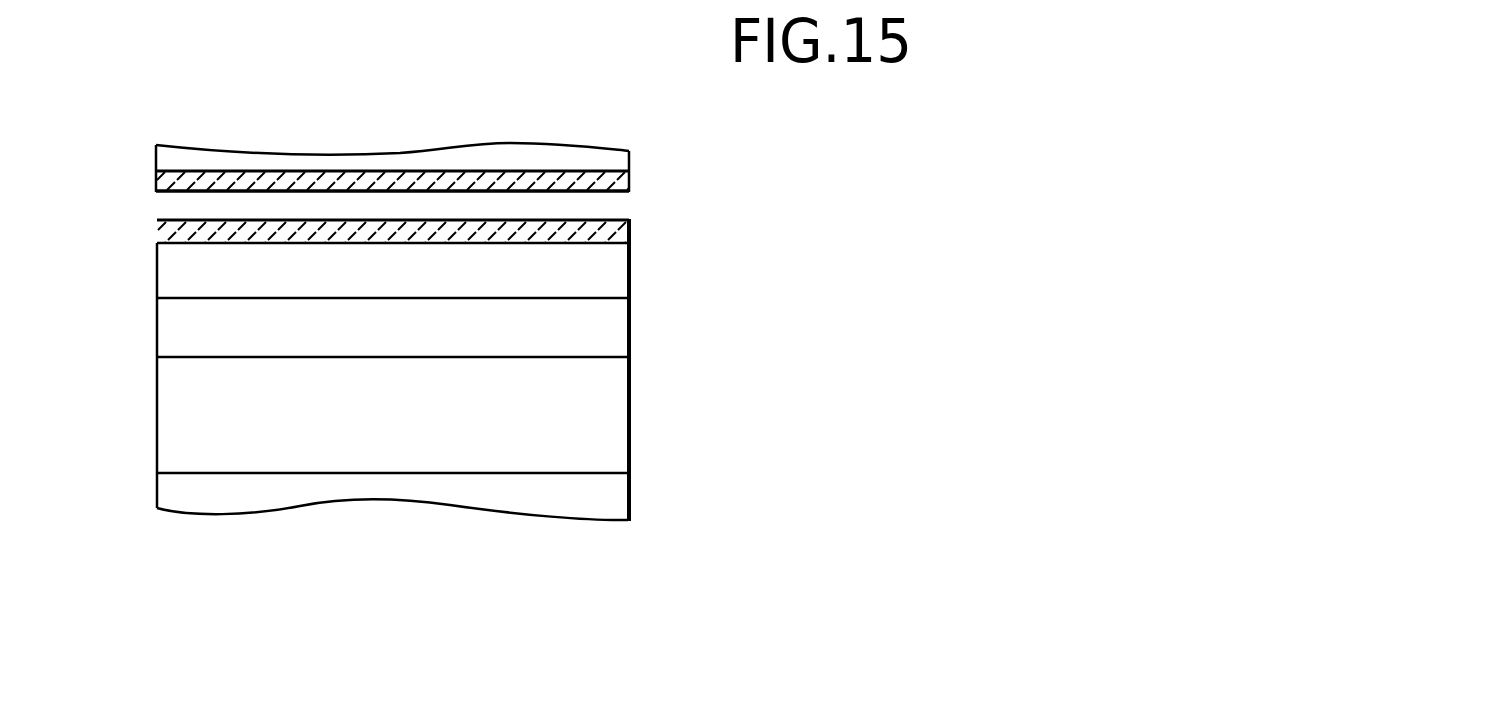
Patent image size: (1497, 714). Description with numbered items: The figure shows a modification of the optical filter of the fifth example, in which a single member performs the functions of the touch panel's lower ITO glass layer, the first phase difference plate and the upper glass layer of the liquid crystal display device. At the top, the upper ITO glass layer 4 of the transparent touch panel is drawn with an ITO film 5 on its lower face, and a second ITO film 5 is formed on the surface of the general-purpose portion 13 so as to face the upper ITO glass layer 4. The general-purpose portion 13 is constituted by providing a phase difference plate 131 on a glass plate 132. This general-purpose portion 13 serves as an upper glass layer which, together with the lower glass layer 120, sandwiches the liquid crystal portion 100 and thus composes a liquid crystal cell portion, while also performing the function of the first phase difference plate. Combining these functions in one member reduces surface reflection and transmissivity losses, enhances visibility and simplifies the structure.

The upper ITO glass layer 4 is at (630, 162).
The ITO film 5 is at (630, 182).
The general-purpose portion 13 is at (812, 313).
The phase difference plate 131 is at (631, 263).
The glass plate 132 is at (631, 325).
The liquid crystal portion 100 is at (631, 393).
The lower glass layer 120 is at (631, 485).